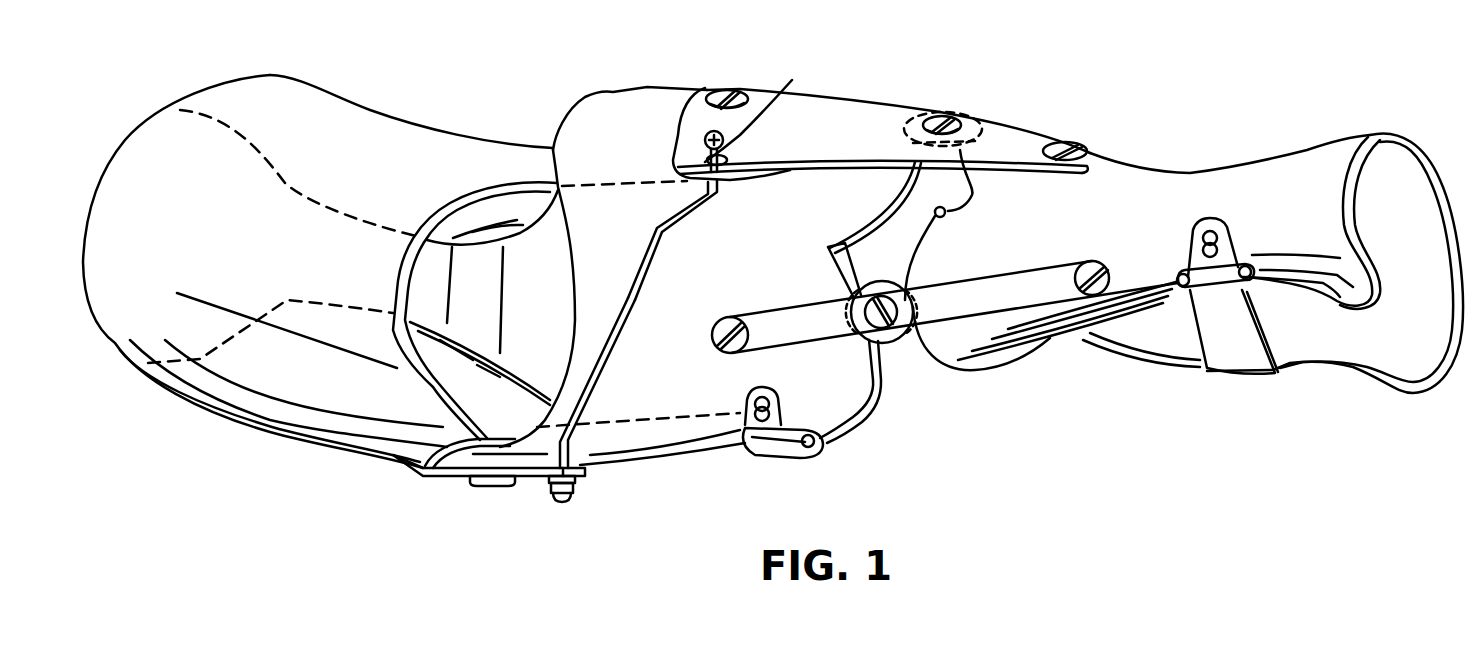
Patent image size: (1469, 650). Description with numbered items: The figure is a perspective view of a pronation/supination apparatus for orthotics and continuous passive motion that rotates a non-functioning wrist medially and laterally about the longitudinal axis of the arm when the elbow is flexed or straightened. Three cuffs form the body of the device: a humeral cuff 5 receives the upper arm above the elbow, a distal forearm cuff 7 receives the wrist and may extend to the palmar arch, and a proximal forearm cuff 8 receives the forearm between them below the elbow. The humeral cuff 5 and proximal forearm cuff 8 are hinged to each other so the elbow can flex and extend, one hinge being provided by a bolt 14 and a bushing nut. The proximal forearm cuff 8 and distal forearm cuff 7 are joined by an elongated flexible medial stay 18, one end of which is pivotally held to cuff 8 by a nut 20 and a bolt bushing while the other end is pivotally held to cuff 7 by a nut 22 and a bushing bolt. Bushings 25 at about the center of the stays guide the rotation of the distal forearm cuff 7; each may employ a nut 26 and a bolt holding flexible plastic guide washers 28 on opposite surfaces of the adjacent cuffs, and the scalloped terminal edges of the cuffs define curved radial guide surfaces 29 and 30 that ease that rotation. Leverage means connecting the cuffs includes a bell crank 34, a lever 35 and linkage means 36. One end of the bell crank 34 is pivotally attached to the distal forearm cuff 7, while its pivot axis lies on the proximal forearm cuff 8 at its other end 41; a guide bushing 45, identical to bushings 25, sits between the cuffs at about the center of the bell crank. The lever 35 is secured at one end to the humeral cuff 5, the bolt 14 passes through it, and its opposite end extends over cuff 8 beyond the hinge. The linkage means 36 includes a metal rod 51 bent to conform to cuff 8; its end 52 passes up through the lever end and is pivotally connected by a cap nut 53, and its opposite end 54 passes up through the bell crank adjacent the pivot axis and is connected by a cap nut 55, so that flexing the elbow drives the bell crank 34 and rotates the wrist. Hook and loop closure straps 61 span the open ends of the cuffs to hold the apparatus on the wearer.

The humeral cuff 5 is at (413, 148).
The distal forearm cuff 7 is at (1297, 173).
The proximal forearm cuff 8 is at (690, 440).
The bolt 14 is at (490, 487).
The medial stay 18 is at (1000, 300).
The nut 20 is at (730, 320).
The nut 22 is at (1103, 270).
The bushings 25 is at (882, 280).
The nut 26 is at (900, 343).
The guide washers 28 is at (900, 283).
The curved radial guide surface 29 is at (960, 207).
The curved radial guide surface 30 is at (857, 237).
The bell crank 34 is at (880, 113).
The lever 35 is at (407, 470).
The linkage means 36 is at (660, 251).
The end of bell crank 41 is at (677, 131).
The guide bushing 45 is at (955, 116).
The rod 51 is at (617, 333).
The rod end 52 is at (580, 488).
The cap nut 53 is at (563, 497).
The rod end 54 is at (727, 160).
The cap nut 55 is at (760, 113).
The hook and loop closure strap 61 is at (490, 295).